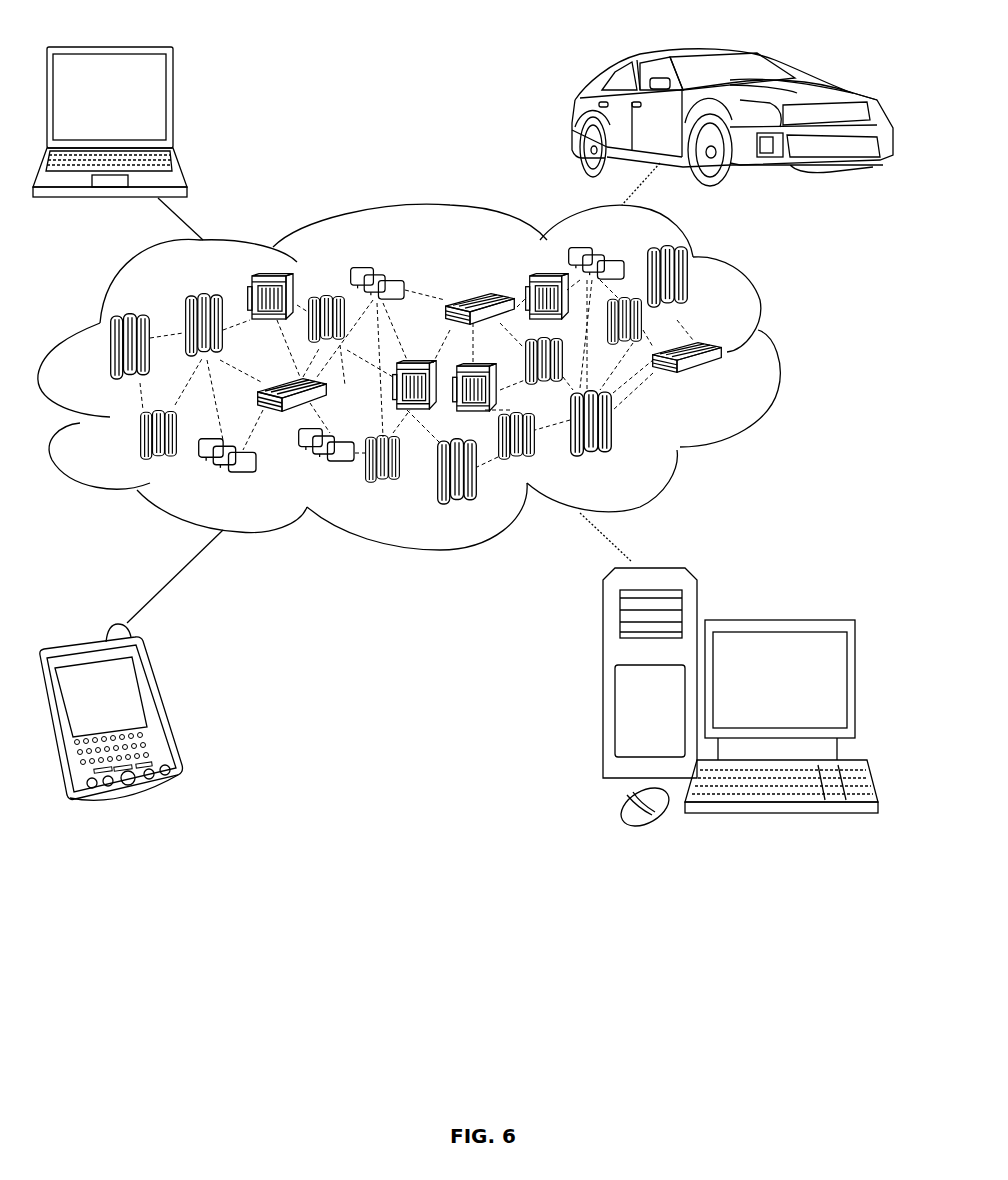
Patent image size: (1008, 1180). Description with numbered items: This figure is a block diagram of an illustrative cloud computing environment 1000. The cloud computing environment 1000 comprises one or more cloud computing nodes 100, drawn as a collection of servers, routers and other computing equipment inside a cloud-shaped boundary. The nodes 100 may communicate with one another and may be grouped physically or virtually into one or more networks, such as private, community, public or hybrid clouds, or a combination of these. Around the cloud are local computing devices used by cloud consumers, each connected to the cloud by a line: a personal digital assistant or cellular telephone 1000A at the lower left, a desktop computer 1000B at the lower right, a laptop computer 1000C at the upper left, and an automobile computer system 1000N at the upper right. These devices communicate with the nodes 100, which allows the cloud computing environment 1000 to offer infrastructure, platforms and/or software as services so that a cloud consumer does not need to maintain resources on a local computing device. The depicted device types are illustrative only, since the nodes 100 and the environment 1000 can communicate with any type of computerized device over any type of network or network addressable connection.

The laptop computer 1000C is at (173, 105).
The automobile computer system 1000N is at (575, 120).
The cloud computing environment 1000 is at (783, 354).
The cloud computing nodes 100 is at (732, 383).
The personal digital assistant (PDA) or cellular telephone 1000A is at (167, 707).
The desktop computer 1000B is at (788, 597).